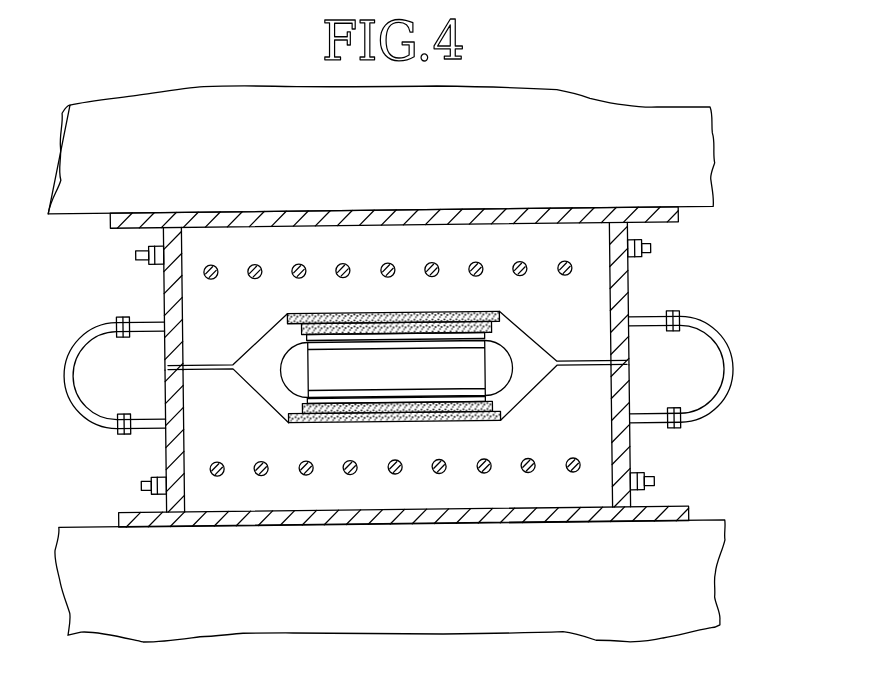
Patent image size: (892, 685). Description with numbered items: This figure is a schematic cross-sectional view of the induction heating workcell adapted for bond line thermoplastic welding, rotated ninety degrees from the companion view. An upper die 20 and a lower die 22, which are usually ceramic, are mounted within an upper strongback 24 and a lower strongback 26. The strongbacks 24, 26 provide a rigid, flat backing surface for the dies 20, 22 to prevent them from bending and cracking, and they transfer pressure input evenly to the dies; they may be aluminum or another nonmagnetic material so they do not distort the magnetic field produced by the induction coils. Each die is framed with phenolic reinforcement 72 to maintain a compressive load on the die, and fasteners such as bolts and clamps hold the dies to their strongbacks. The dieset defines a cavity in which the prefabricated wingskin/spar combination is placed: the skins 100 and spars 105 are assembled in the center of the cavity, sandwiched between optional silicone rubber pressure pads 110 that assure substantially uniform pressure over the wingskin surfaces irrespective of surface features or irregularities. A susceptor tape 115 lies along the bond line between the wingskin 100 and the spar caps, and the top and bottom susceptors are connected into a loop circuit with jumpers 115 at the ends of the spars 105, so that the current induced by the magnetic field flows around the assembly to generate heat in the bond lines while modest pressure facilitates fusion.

The upper die 20 is at (237, 316).
The lower die 22 is at (558, 494).
The upper strongback 24 is at (713, 170).
The lower strongback 26 is at (717, 575).
The phenolic reinforcement 72 is at (165, 269).
The wingskin 100 is at (493, 402).
The spar 105 is at (317, 364).
The silicone rubber pressure pad 110 is at (503, 313).
The susceptor tape 115 is at (307, 392).